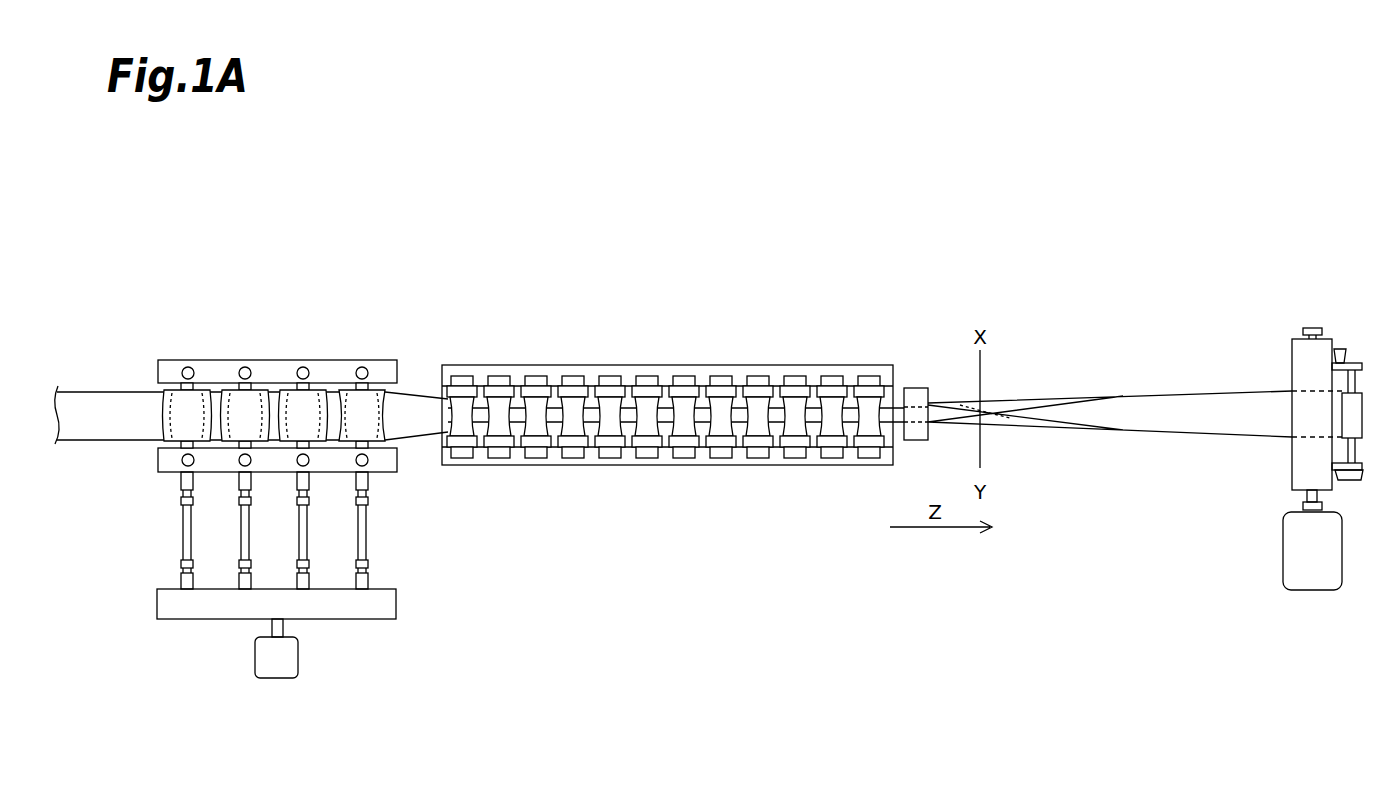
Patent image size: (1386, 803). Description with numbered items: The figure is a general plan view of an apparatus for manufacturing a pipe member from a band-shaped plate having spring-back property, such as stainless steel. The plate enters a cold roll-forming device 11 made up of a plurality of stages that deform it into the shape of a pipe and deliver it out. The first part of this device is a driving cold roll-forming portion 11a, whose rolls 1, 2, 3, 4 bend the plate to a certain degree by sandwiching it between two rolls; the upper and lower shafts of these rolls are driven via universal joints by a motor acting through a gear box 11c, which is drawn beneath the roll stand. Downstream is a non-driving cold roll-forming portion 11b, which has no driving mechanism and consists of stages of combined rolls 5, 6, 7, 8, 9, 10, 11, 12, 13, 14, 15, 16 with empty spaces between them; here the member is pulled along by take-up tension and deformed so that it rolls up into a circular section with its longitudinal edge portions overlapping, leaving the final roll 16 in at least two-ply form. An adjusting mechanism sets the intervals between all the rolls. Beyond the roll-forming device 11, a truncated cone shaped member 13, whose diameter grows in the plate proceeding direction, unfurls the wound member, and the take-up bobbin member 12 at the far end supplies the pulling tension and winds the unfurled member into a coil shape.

The roll 1 is at (187, 383).
The roll 2 is at (245, 383).
The roll 3 is at (303, 383).
The roll 4 is at (362, 383).
The roll 5 is at (462, 388).
The roll 6 is at (499, 388).
The roll 7 is at (536, 388).
The roll 8 is at (573, 388).
The roll 9 is at (610, 388).
The roll 10 is at (647, 388).
The cold roll-forming device 11 is at (195, 243).
The driving cold roll-forming portion 11a is at (377, 299).
The non-driving cold roll-forming portion 11b is at (457, 296).
The gear box 11c is at (400, 700).
The take-up bobbin member 12 is at (1370, 243).
The truncated cone shaped member 13 is at (986, 407).
The roll 14 is at (795, 388).
The roll 15 is at (832, 388).
The roll 16 is at (869, 388).